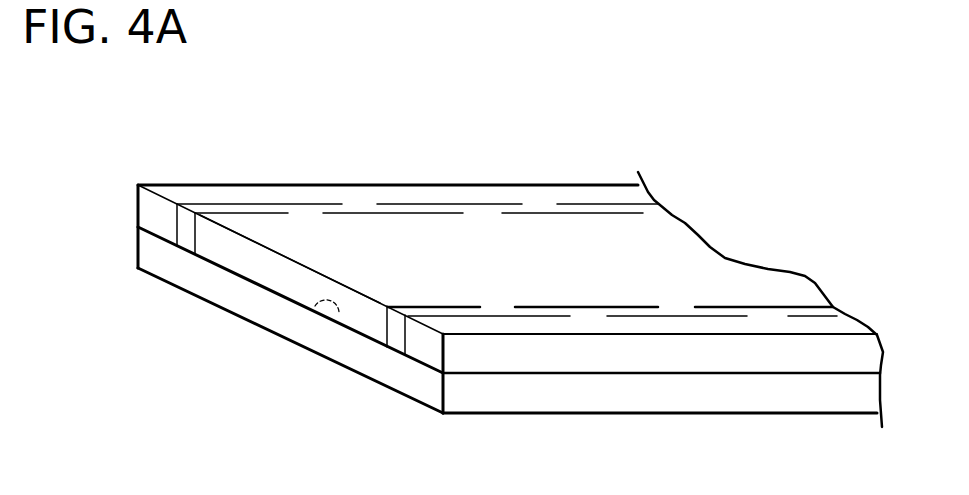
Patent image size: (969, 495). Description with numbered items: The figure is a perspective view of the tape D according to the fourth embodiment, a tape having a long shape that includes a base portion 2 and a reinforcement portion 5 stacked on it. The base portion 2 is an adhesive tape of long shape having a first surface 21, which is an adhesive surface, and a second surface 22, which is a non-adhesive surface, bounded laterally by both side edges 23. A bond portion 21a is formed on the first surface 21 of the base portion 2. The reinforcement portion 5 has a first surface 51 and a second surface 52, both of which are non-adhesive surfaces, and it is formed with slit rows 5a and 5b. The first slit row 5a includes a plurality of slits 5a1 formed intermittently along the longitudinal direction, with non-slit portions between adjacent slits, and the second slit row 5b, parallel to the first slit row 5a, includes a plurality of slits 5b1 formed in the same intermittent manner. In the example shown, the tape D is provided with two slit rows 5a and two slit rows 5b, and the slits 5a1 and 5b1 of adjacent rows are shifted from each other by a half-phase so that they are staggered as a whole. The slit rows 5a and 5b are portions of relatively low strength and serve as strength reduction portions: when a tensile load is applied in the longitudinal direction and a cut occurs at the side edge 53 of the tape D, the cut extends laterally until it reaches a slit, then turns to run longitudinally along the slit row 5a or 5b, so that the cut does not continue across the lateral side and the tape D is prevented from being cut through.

The tape D is at (188, 160).
The base portion 2 is at (137, 255).
The reinforcement portion 5 is at (137, 212).
The first surface 21 is at (303, 356).
The bond portion 21a is at (313, 305).
The second surface 22 is at (421, 380).
The side edges 23 is at (488, 390).
The first surface 51 is at (284, 286).
The second surface 52 is at (277, 243).
The side edge 53 is at (562, 352).
The first slit row 5a is at (632, 315).
The slits 5a1 is at (507, 209).
The second slit row 5b is at (550, 307).
The slits 5b1 is at (514, 206).